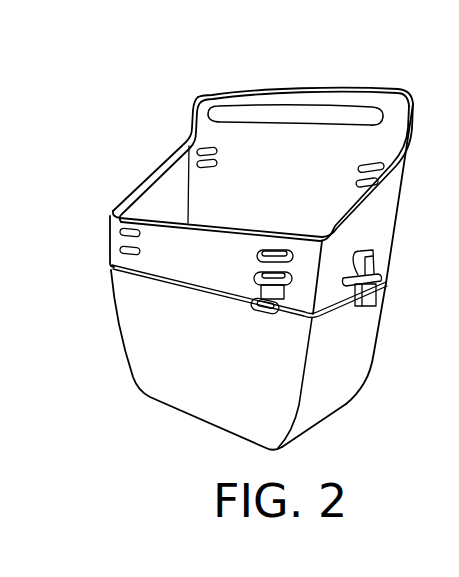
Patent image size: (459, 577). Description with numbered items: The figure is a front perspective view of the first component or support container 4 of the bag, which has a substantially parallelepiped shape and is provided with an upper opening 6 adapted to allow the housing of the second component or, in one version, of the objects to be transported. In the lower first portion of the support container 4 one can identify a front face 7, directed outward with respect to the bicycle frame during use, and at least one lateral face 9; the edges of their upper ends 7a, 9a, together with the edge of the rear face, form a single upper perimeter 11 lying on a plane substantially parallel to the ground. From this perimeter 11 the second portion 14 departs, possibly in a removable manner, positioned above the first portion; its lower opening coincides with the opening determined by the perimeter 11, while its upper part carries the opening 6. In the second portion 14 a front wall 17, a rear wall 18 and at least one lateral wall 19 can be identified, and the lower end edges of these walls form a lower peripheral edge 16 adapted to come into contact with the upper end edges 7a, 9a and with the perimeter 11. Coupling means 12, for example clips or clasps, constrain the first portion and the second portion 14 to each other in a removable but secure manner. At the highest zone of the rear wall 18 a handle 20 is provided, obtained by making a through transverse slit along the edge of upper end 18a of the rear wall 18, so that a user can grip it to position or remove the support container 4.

The first component or support container 4 is at (254, 248).
The opening 6 is at (254, 165).
The front surface or face 7 is at (242, 365).
The edge of upper end of the front face 7a is at (271, 330).
The lateral surface or face 9 is at (343, 365).
The edge of upper end of the lateral face 9a is at (341, 301).
The upper perimeter 11 is at (99, 259).
The coupling means 12 is at (393, 272).
The second portion 14 is at (388, 225).
The lower peripheral edge 16 is at (165, 290).
The front wall 17 is at (152, 200).
The rear wall 18 is at (317, 75).
The edge of upper end of the rear wall 18a is at (362, 89).
The lateral wall 19 is at (180, 245).
The handle 20 is at (308, 88).